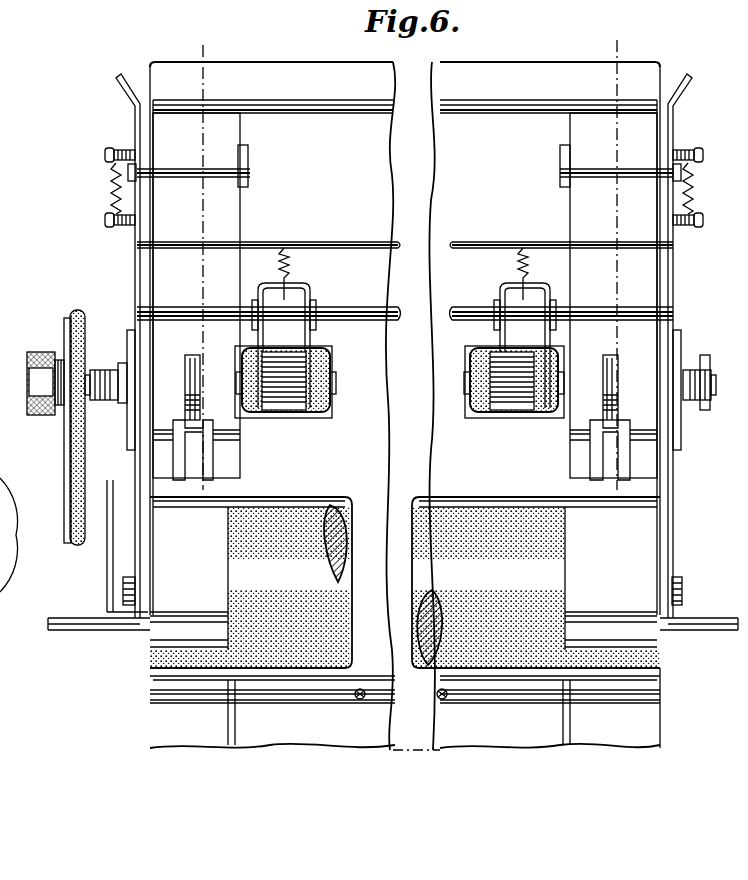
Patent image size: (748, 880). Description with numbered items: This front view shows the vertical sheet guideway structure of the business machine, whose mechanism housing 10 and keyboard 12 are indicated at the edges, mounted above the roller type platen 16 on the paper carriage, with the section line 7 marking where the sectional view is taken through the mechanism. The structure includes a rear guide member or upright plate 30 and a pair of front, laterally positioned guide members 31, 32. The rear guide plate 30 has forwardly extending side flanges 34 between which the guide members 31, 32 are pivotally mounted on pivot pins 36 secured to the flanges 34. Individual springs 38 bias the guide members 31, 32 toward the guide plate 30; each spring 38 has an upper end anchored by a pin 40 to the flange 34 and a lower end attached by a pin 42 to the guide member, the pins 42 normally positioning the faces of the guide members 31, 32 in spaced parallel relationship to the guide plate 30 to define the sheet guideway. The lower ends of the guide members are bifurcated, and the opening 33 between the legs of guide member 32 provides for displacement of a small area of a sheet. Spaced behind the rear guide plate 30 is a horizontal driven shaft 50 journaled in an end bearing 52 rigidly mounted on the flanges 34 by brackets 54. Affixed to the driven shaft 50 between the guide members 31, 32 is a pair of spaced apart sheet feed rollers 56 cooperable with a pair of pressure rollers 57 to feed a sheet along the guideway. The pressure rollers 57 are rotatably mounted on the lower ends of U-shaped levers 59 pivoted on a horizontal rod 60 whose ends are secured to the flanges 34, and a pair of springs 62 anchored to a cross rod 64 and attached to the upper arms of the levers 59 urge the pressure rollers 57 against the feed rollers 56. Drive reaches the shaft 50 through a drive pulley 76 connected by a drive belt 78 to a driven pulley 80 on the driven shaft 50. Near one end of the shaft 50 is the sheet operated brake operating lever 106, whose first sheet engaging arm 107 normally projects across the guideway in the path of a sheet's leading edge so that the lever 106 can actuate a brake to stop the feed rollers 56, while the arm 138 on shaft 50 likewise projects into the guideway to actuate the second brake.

The section line 7- 7 is at (607, 37).
The mechanism housing 10 is at (190, 43).
The keyboard 12 is at (22, 508).
The roller type platen 16 is at (446, 510).
The rear guide plate 30 is at (433, 207).
The front guide member 31 is at (232, 208).
The front guide member 32 is at (568, 225).
The opening 33 is at (613, 400).
The side flanges 34 is at (135, 124).
The pivot pins 36 is at (182, 180).
The springs 38 is at (112, 170).
The pins 40 is at (105, 155).
The pins 42 is at (105, 220).
The driven shaft 50 is at (336, 387).
The end bearing 52 is at (118, 395).
The brackets 54 is at (128, 432).
The sheet feed rollers 56 is at (310, 412).
The pressure rollers 57 is at (284, 405).
The U-shaped levers 59 is at (312, 340).
The horizontal rod 60 is at (368, 322).
The springs 62 is at (292, 268).
The cross rod 64 is at (357, 258).
The drive pulley 76 is at (66, 455).
The drive belt 78 is at (78, 312).
The driven pulley 80 is at (66, 330).
The brake operating lever 106 is at (612, 365).
The first sheet engaging arm 107 is at (604, 385).
The arm 138 is at (188, 385).